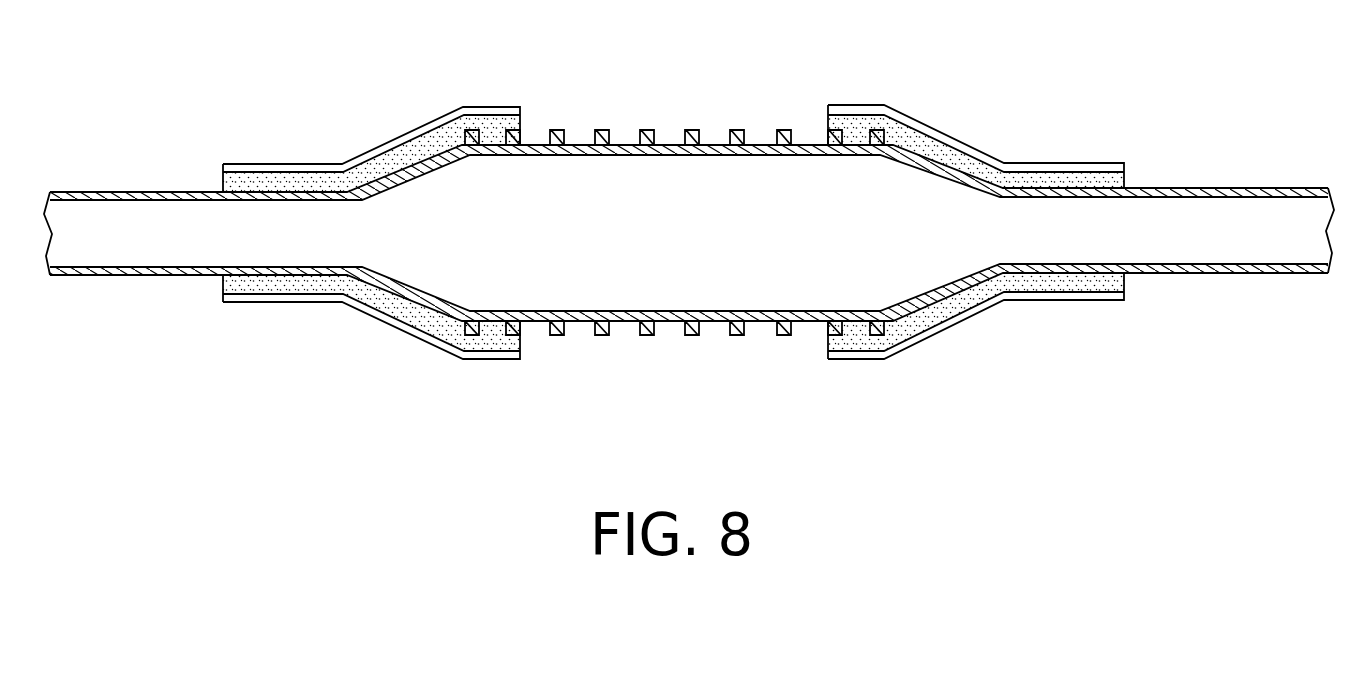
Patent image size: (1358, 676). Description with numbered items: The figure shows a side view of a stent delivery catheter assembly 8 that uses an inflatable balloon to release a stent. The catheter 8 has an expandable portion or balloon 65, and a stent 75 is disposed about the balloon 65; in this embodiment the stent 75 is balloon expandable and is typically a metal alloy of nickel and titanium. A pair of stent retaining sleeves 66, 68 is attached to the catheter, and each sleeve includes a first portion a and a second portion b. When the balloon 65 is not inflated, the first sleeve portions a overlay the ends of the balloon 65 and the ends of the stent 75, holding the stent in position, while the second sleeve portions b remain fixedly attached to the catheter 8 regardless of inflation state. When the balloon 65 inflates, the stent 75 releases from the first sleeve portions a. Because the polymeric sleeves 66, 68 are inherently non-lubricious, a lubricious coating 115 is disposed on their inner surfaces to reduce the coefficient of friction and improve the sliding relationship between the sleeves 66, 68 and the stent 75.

The stent delivery catheter assembly 8 is at (689, 245).
The balloon 65 is at (767, 253).
The first stent retaining sleeve 66 is at (377, 138).
The second stent retaining sleeve 68 is at (973, 133).
The stent 75 is at (693, 130).
The lubricious coating 115 is at (433, 143).
The first sleeve portion a is at (412, 130).
The second sleeve portion b is at (280, 164).